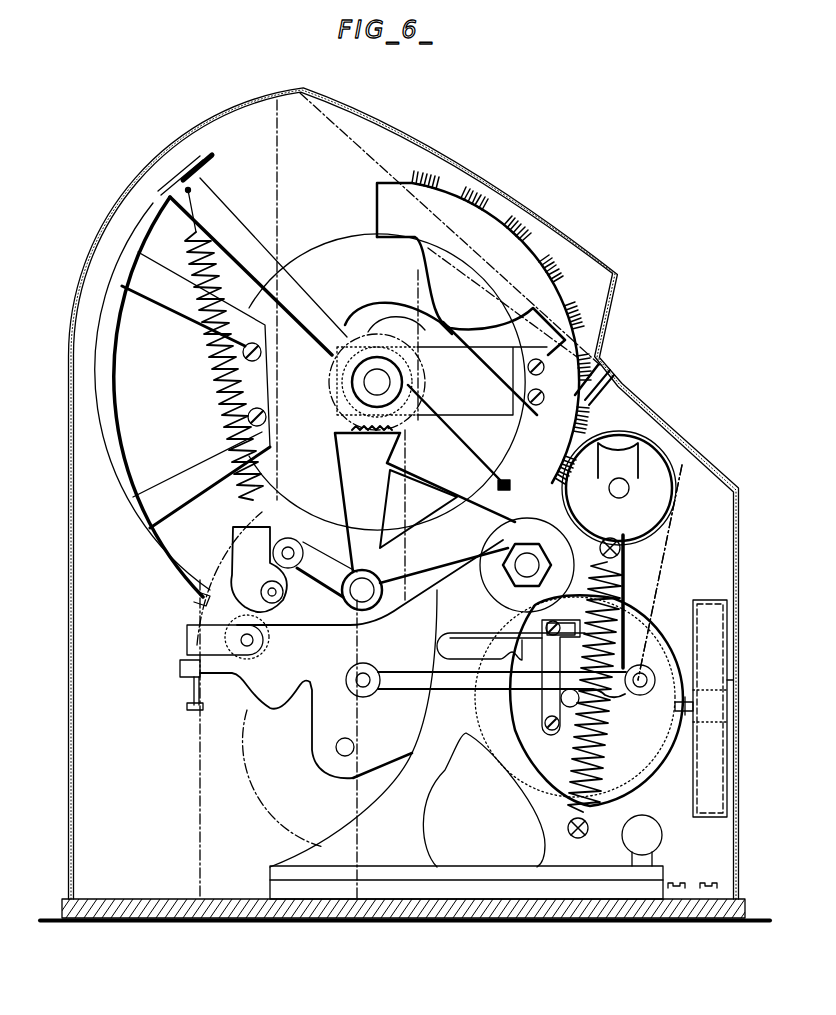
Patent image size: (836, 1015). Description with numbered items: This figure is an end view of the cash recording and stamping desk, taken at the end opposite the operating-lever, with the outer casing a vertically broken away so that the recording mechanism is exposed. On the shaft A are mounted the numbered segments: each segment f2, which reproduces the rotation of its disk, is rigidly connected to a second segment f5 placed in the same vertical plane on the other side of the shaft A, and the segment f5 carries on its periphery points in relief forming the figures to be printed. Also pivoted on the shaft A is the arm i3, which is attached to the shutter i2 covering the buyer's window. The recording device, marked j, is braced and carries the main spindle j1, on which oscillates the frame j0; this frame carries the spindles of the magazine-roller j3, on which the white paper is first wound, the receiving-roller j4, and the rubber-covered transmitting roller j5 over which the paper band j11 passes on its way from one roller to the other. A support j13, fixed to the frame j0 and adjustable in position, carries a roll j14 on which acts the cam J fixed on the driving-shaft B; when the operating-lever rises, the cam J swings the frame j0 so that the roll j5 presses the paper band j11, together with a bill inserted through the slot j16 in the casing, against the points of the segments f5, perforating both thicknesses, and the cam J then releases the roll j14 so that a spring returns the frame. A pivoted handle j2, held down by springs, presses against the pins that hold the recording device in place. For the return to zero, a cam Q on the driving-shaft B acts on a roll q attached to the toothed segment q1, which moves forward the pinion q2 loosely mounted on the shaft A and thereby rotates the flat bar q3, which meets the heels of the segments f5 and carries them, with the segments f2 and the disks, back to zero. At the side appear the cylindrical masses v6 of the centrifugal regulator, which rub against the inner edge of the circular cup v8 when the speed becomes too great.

The casing a is at (67, 592).
The segment f2 is at (108, 395).
The second segment f5 is at (464, 327).
The shutter i2 is at (165, 180).
The arm i3 is at (258, 327).
The shaft A is at (387, 382).
The circular pinion q2 is at (326, 382).
The toothed segment q1 is at (341, 470).
The flat bar or shelf q3 is at (507, 490).
The cam Q is at (292, 538).
The roll q is at (309, 553).
The roll j14 is at (278, 622).
The driving-shaft B is at (268, 592).
The cam J is at (232, 537).
The support j13 is at (184, 640).
The magazine-roller j3 is at (351, 693).
The lever j is at (552, 560).
The main spindle j1 is at (510, 560).
The transmitting roller j5 is at (619, 487).
The oscillating frame j0 is at (626, 576).
The paper band j11 is at (669, 549).
The receiving-roller j4 is at (579, 700).
The pivoted handle j2 is at (642, 840).
The circular cup v8 is at (713, 708).
The cylindrical masses v6 is at (704, 722).
The slot or slit j16 is at (618, 375).